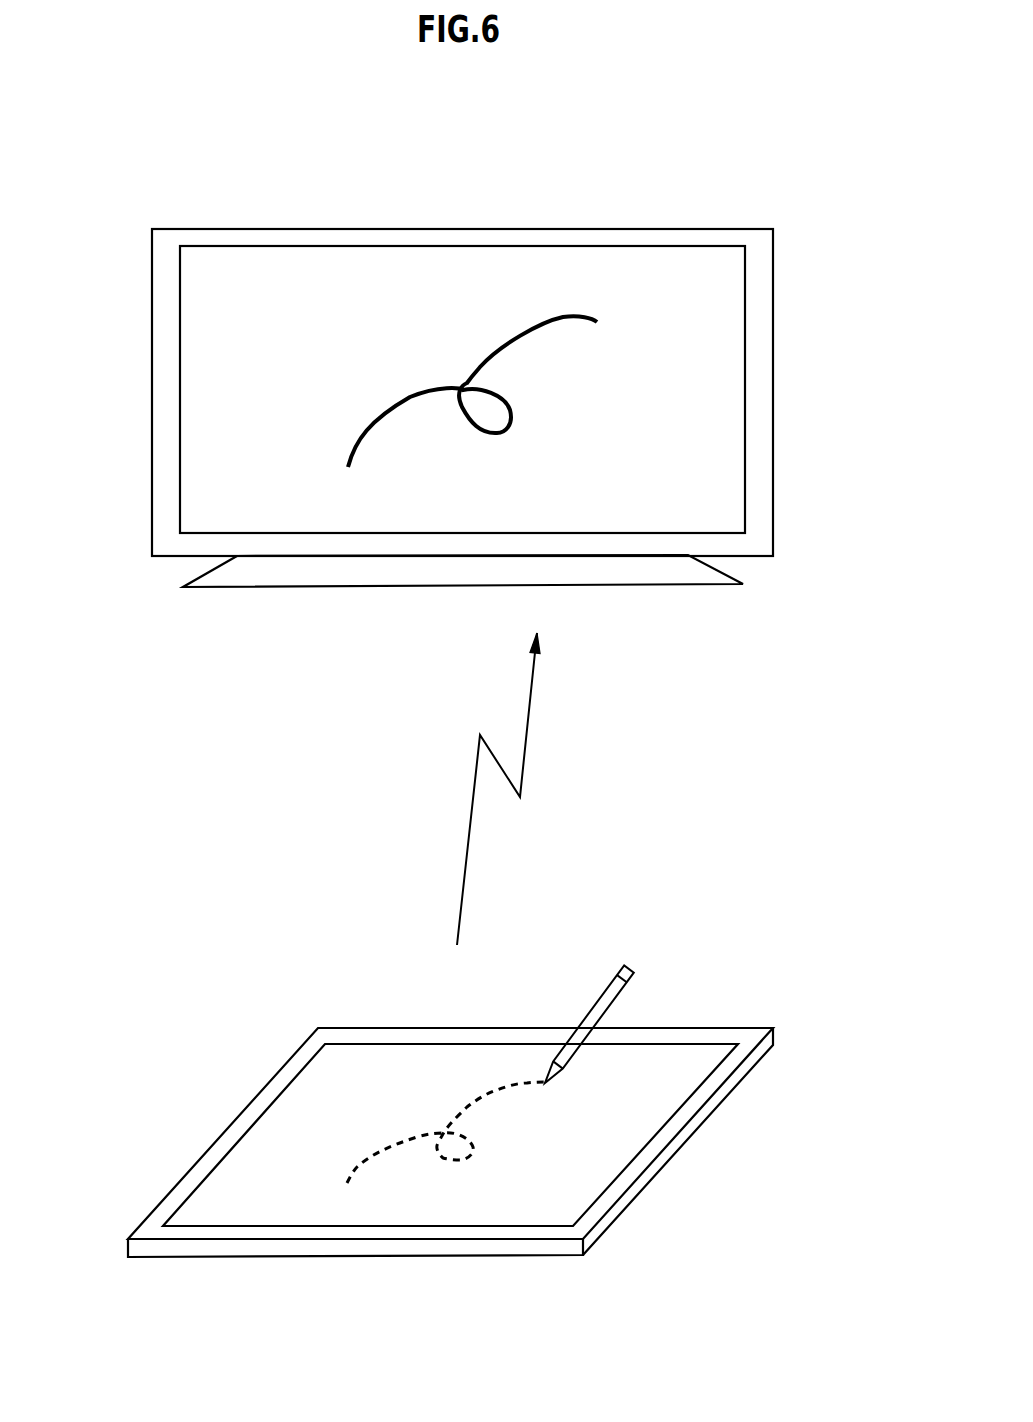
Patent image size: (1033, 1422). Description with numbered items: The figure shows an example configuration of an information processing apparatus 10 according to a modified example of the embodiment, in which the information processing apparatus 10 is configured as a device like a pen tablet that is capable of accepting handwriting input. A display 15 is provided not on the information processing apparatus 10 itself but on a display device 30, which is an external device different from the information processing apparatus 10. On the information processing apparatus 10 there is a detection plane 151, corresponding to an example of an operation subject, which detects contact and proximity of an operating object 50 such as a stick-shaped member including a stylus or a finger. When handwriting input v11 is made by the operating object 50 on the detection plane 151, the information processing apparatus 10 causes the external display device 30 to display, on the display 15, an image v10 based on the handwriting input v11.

The display device 30 is at (718, 228).
The display 15 is at (632, 246).
The image v10 is at (524, 328).
The information processing apparatus 10 is at (720, 1027).
The detection plane 151 is at (385, 1062).
The operating object 50 is at (628, 965).
The handwriting input v11 is at (357, 1165).